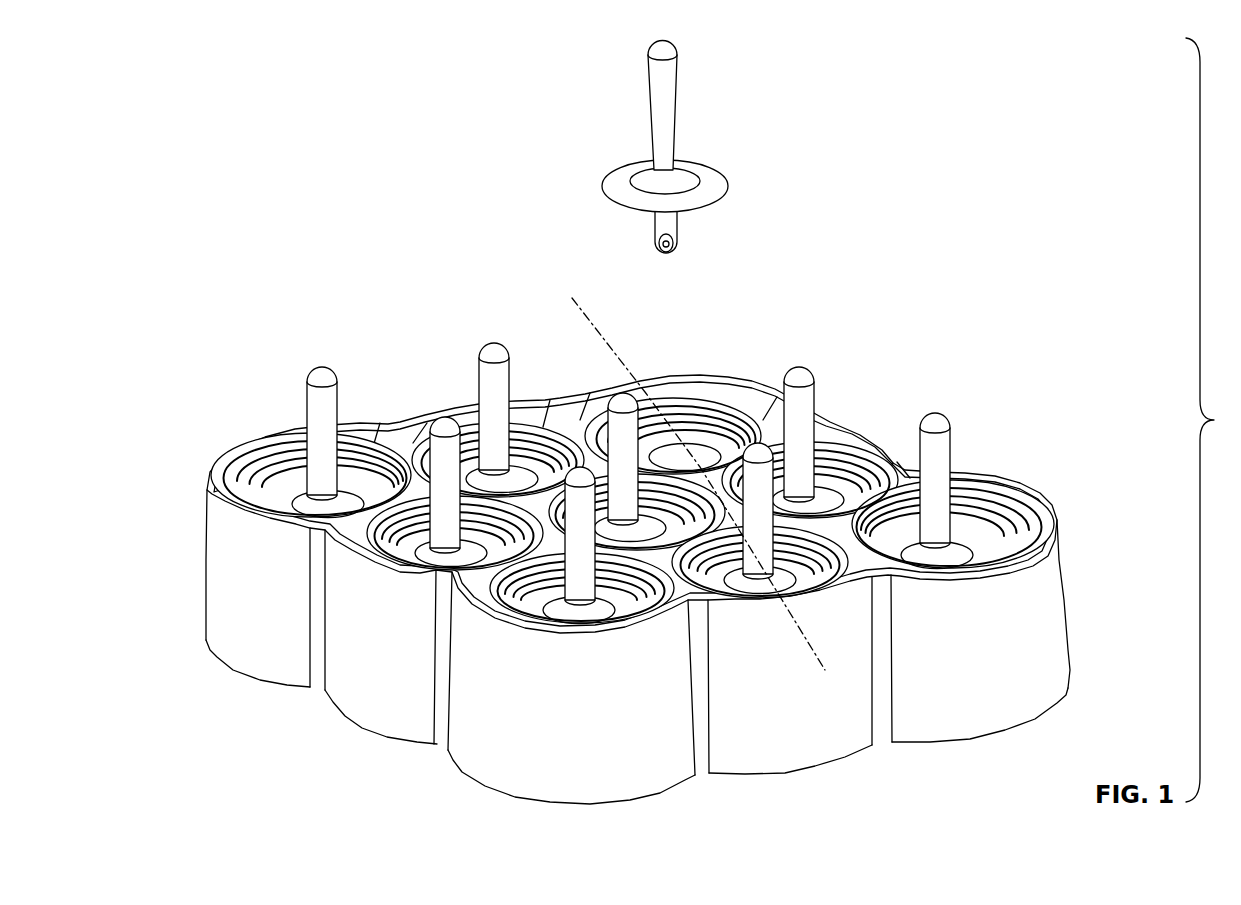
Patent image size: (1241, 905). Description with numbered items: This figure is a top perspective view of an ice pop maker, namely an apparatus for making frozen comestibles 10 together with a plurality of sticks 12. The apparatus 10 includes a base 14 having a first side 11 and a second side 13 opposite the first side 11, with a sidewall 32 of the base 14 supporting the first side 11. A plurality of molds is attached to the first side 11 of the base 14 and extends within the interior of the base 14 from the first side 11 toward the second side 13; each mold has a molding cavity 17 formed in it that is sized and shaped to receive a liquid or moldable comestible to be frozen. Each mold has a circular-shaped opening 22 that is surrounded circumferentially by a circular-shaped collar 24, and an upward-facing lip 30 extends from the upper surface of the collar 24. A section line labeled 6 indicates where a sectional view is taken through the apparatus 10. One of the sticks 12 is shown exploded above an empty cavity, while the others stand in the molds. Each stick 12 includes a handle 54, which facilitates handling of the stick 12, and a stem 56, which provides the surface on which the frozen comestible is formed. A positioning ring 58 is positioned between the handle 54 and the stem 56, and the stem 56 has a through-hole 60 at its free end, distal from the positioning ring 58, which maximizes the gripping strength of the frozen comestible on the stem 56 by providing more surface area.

The section line of FIG. 6 is at (575, 298).
The apparatus for making frozen comestibles 10 is at (673, 543).
The first side 11 is at (1052, 514).
The sticks 12 is at (626, 314).
The second side 13 is at (1037, 723).
The base 14 is at (1082, 577).
The molding cavity 17 is at (712, 438).
The circular-shaped opening 22 is at (683, 412).
The circular-shaped collar 24 is at (263, 483).
The upward-facing lip 30 is at (290, 470).
The sidewall 32 is at (1062, 660).
The handle 54 is at (678, 78).
The stem 56 is at (678, 224).
The positioning ring 58 is at (711, 175).
The through-hole 60 is at (661, 254).